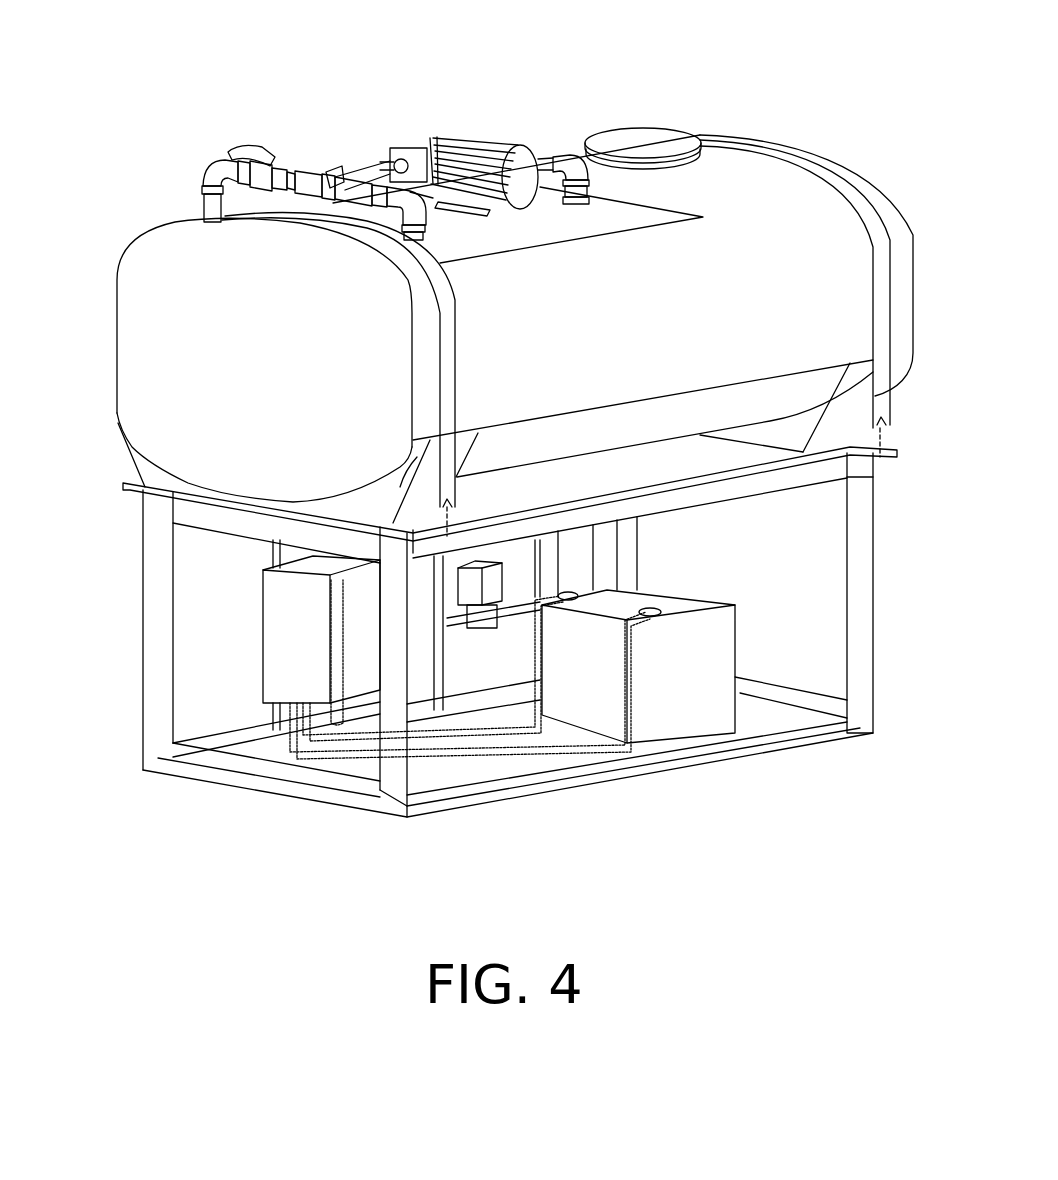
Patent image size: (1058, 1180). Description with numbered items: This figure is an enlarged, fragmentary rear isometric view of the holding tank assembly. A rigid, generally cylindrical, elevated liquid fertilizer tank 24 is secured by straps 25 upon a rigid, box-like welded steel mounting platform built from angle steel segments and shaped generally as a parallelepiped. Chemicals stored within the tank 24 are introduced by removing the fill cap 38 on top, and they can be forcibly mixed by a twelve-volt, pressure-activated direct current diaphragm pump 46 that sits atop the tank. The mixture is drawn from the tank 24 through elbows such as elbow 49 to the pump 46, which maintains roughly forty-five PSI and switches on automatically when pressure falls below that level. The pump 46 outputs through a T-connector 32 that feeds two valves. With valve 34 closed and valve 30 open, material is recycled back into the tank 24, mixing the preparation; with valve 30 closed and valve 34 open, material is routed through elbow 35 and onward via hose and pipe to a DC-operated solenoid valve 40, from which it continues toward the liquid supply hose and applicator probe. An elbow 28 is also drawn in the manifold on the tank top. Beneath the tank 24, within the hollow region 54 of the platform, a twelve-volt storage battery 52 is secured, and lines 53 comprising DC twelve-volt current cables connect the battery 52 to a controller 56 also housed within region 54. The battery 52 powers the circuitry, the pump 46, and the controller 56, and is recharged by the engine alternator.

The liquid fertilizer tank 24 is at (163, 290).
The straps 25 is at (882, 265).
The inlet elbow 28 is at (442, 250).
The valve 30 is at (362, 195).
The T-connector 32 is at (305, 185).
The valve 34 is at (263, 157).
The elbow 35 is at (213, 173).
The fill cap 38 is at (650, 138).
The solenoid valve 40 is at (488, 588).
The diaphragm pump 46 is at (467, 136).
The elbow 49 is at (573, 155).
The storage battery 52 is at (697, 697).
The lines 53 is at (460, 735).
The hollow region 54 is at (742, 547).
The controller 56 is at (283, 670).